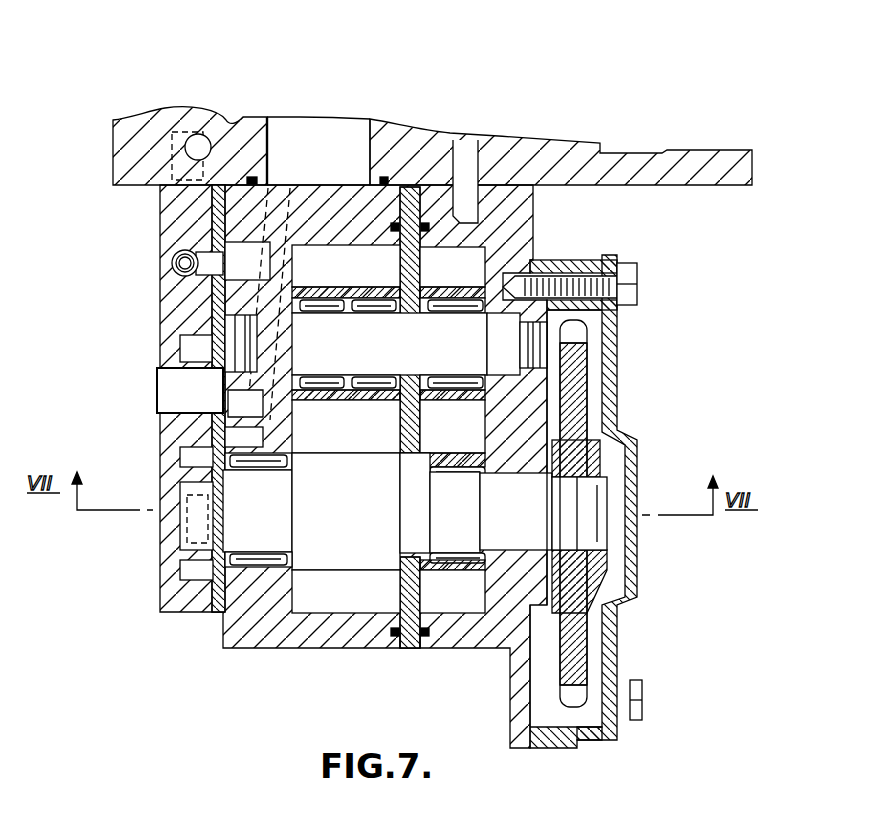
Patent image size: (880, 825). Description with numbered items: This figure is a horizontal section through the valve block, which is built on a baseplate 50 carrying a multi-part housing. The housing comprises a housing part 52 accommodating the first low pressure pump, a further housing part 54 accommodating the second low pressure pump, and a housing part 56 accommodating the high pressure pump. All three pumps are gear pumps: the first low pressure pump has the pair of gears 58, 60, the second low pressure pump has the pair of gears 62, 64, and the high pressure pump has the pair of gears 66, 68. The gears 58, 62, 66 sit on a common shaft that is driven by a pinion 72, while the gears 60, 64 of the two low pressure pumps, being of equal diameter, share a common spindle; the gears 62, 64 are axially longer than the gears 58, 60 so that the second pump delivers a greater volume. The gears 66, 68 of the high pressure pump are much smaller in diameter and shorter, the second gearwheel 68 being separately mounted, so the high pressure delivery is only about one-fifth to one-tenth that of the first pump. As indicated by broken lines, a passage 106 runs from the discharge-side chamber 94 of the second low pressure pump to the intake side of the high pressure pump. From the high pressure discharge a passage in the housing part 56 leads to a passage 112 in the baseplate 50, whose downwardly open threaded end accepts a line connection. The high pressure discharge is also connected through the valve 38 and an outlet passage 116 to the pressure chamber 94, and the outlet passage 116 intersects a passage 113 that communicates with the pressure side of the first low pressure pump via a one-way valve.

The valve 38 is at (170, 268).
The baseplate 50 is at (700, 176).
The housing part 52 is at (443, 638).
The housing part 54 is at (298, 631).
The housing part 56 is at (172, 533).
The gear 58 is at (458, 604).
The gear 60 is at (470, 258).
The gear 62 is at (356, 604).
The gear 64 is at (377, 260).
The gear 66 is at (197, 578).
The second gearwheel 68 is at (186, 346).
The pinion 72 is at (598, 358).
The discharge-side chamber 94 is at (340, 141).
The passage 106 is at (286, 336).
The passage 112 is at (209, 127).
The passage 113 is at (170, 173).
The outlet passage 116 is at (280, 197).